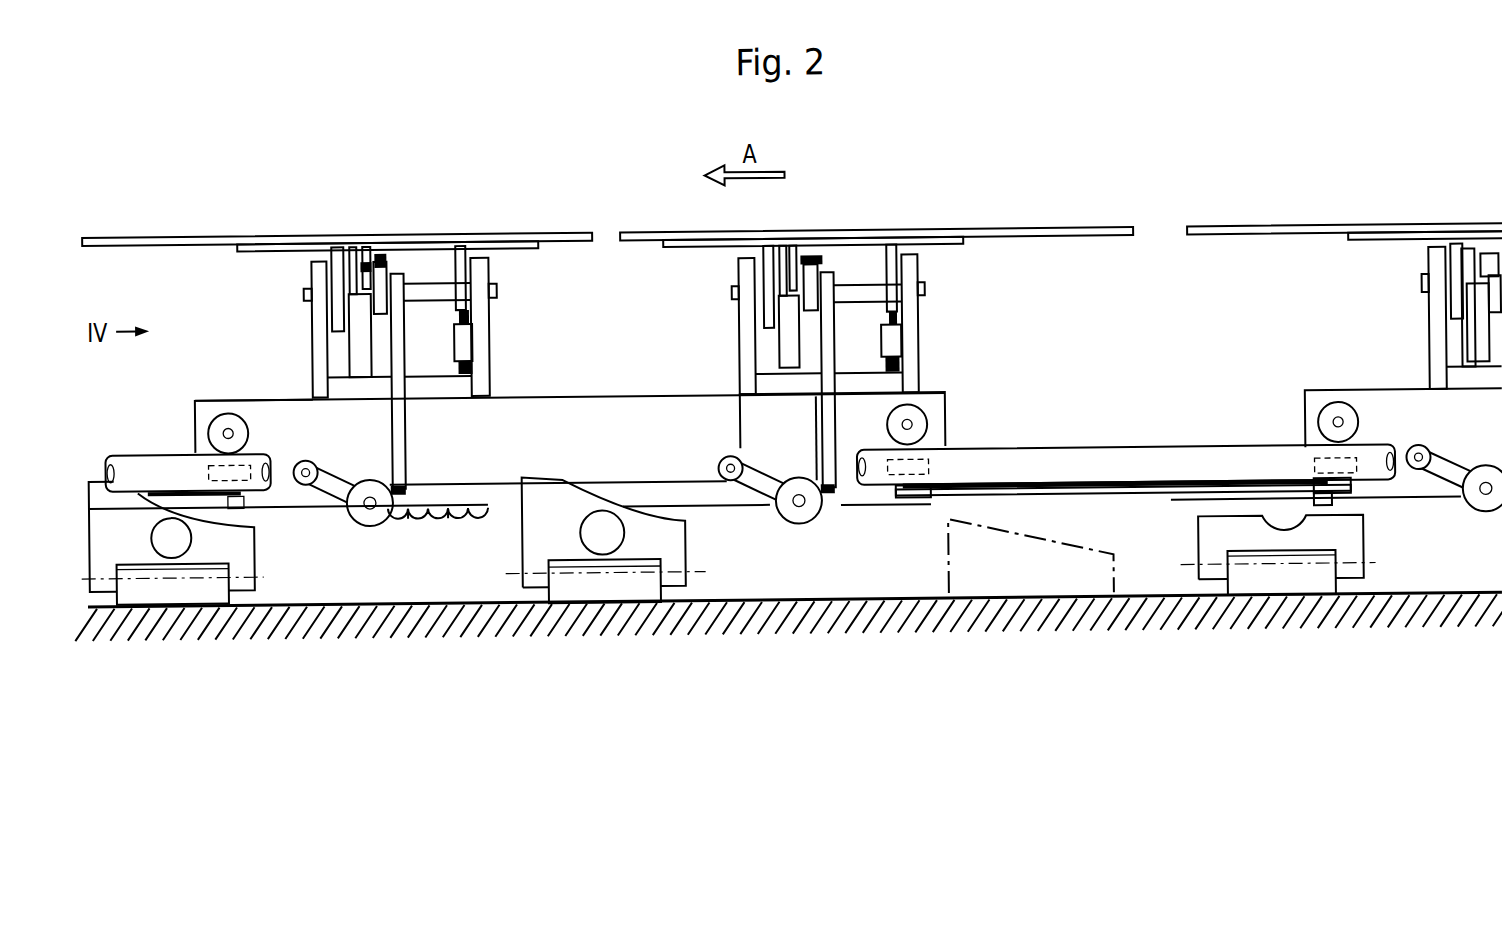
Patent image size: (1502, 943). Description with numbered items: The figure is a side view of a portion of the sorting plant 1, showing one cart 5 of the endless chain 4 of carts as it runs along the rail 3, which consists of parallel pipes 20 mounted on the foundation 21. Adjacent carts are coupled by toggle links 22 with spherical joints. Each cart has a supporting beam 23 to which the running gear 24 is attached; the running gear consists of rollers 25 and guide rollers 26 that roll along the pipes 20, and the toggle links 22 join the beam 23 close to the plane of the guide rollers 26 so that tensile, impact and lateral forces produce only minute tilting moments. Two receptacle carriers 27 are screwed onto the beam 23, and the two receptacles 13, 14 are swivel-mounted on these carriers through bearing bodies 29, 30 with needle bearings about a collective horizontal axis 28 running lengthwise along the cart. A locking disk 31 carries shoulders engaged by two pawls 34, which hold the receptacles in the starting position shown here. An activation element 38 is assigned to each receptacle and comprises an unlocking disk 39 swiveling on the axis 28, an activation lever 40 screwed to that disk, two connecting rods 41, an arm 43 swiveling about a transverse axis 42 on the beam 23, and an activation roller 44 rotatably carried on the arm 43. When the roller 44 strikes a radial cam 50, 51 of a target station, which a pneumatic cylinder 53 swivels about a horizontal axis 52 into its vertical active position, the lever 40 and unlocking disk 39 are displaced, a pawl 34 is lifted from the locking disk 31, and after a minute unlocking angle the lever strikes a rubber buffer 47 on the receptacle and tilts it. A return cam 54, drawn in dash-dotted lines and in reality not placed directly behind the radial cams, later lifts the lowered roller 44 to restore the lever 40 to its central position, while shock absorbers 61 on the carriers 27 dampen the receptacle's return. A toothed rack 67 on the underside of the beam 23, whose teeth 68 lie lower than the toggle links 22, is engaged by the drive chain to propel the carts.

The plant 1 is at (481, 122).
The rail 3 is at (119, 437).
The chain of carts 4 is at (1171, 137).
The cart 5 is at (1179, 354).
The receptacle 13 is at (193, 237).
The receptacle 14 is at (1068, 223).
The pipe 20 is at (163, 465).
The foundation 21 is at (822, 602).
The toggle link 22 is at (1162, 492).
The supporting beam 23 is at (615, 420).
The running gear 24 is at (952, 386).
The roller 25 is at (220, 417).
The guide roller 26 is at (192, 435).
The receptacle carrier 27 is at (482, 374).
The horizontal axis 28 is at (305, 295).
The bearing body 29 is at (342, 270).
The bearing body 30 is at (462, 253).
The locking disk 31 is at (357, 280).
The pawl 34 is at (357, 343).
The activation element 38 is at (335, 426).
The unlocking disk 39 is at (374, 250).
The activation lever 40 is at (380, 303).
The connecting rod 41 is at (398, 368).
The transverse axis 42 is at (298, 462).
The arm 43 is at (333, 487).
The activation roller 44 is at (360, 517).
The rubber buffer 47 is at (390, 253).
The radial cam 50 is at (242, 553).
The radial cam 51 is at (680, 545).
The horizontal axis 52 is at (210, 584).
The pneumatic cylinder 53 is at (183, 538).
The return cam 54 is at (1053, 560).
The shock absorber 61 is at (487, 323).
The toothed rack 67 is at (411, 522).
The teeth 68 is at (446, 522).